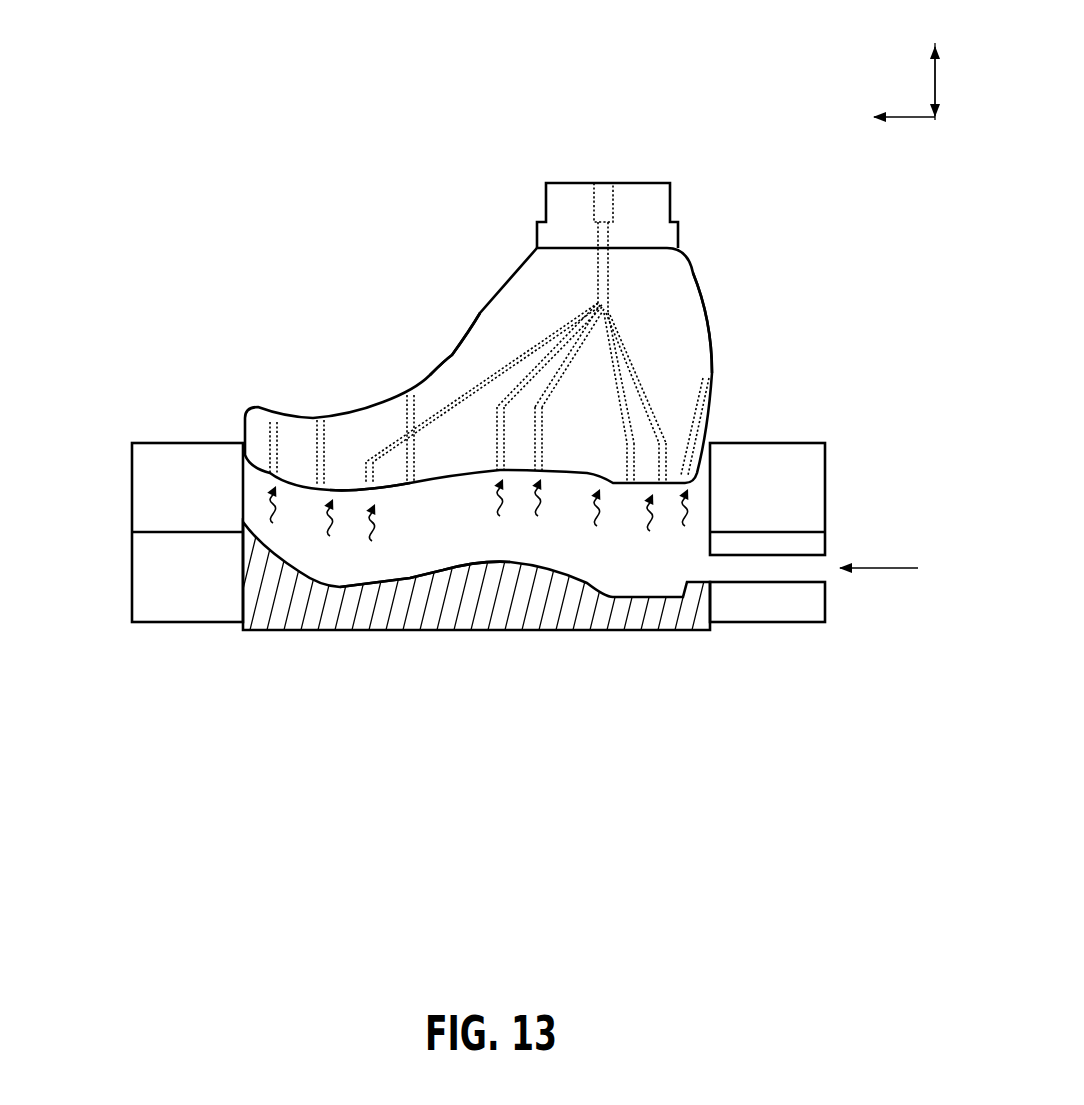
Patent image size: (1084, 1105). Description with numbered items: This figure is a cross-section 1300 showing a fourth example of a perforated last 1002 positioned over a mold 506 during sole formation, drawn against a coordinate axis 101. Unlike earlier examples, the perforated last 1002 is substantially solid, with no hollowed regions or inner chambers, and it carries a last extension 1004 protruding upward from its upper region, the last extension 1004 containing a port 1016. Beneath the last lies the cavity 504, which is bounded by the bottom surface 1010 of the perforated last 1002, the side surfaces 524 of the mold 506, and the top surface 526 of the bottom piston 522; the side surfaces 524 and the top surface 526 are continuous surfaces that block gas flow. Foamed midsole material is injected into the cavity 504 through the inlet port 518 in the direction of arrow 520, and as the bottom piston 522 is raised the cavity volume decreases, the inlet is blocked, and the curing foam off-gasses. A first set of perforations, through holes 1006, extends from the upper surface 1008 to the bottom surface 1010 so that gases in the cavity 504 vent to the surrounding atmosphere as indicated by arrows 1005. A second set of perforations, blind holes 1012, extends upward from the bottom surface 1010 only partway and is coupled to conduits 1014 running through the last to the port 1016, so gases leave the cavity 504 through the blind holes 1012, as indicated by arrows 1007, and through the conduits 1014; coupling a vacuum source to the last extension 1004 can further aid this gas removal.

The cross-section 1300 is at (248, 110).
The coordinate axis 101 is at (904, 60).
The perforated last 1002 is at (463, 315).
The last extension 1004 is at (652, 182).
The port 1016 is at (603, 182).
The conduits 1014 is at (597, 258).
The upper surface 1008 is at (452, 355).
The through holes 1006 is at (400, 397).
The blind holes 1012 is at (365, 467).
The bottom surface 1010 is at (402, 486).
The mold 506 is at (126, 468).
The side surfaces 524 is at (242, 500).
The bottom piston 522 is at (432, 632).
The top surface 526 is at (418, 580).
The cavity 504 is at (452, 561).
The inlet port 518 is at (818, 568).
The arrow 520 is at (875, 572).
The arrows 1005 is at (323, 526).
The arrows 1007 is at (647, 511).